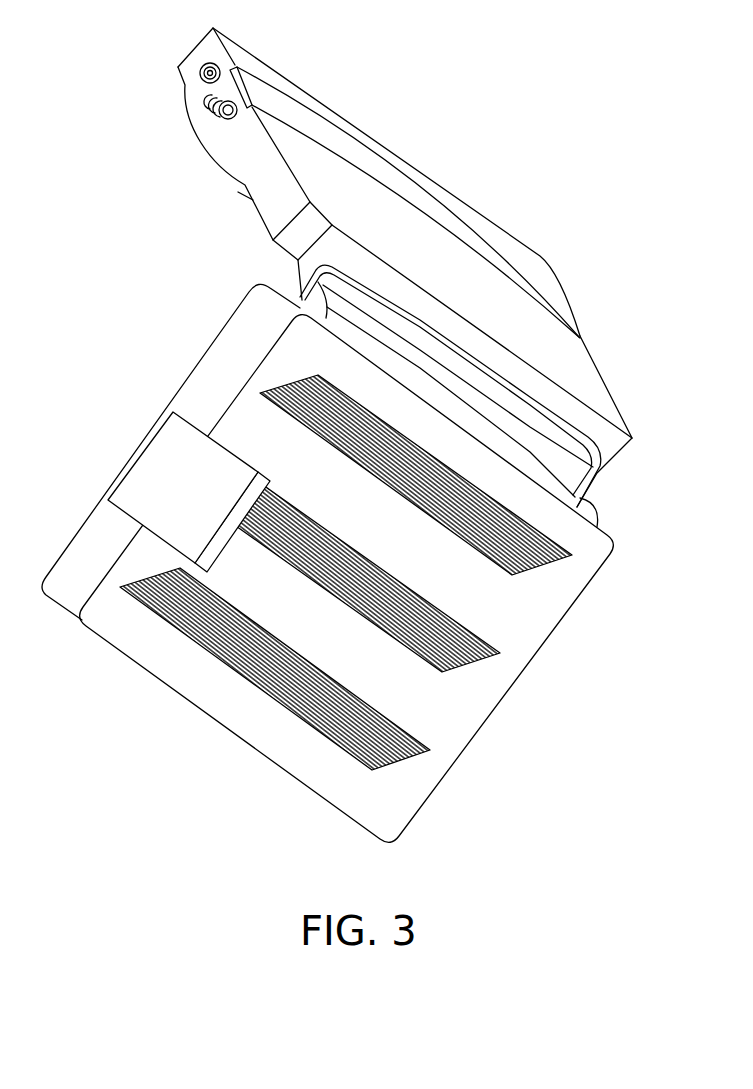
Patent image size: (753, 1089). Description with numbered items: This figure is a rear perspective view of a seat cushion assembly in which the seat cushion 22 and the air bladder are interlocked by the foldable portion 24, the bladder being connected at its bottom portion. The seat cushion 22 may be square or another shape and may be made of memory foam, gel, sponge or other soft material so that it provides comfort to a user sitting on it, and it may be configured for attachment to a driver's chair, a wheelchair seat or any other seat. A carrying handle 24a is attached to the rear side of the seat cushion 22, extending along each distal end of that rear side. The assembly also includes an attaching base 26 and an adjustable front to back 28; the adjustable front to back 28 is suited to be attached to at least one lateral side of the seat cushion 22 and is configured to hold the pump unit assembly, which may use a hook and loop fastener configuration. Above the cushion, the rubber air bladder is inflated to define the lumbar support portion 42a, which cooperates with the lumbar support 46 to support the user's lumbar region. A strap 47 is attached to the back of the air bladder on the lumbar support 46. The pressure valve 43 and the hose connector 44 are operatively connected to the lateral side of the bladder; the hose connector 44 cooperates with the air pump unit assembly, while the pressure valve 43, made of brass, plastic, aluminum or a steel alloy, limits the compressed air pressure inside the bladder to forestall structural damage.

The seat cushion 22 is at (220, 333).
The foldable portion 24 is at (600, 505).
The carrying handle 24a is at (550, 415).
The attaching base 26 is at (500, 653).
The adjustable front to back 28 is at (167, 452).
The lumbar support portion 42a is at (200, 146).
The pressure valve 43 is at (200, 71).
The hose connector 44 is at (210, 99).
The lumbar support 46 is at (317, 98).
The strap 47 is at (425, 205).